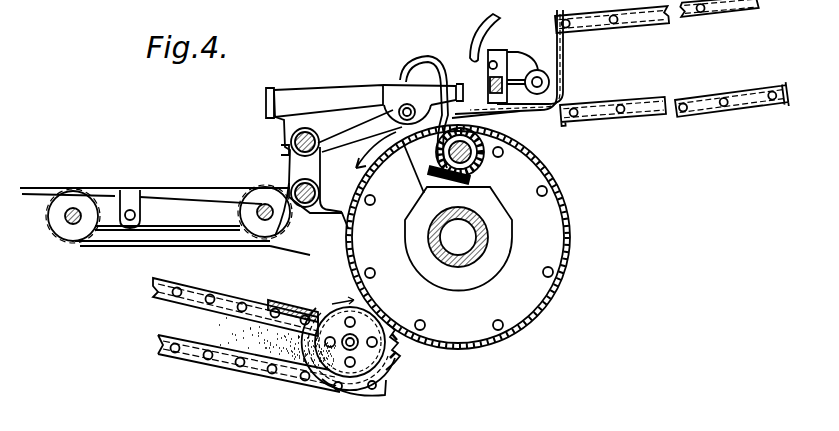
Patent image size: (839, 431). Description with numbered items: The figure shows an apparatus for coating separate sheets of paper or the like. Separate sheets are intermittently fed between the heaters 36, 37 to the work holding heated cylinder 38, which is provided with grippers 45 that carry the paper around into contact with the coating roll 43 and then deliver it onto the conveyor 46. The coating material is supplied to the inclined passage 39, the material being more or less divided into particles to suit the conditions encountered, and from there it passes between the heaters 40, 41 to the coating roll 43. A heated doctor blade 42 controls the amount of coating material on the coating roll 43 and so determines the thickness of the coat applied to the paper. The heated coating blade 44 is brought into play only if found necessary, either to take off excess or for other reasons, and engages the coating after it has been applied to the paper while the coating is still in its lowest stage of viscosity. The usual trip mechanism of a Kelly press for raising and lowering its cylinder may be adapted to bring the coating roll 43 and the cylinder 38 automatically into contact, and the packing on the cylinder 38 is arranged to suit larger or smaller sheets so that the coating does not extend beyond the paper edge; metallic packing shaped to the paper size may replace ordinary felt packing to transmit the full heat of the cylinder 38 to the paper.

The heater 36 is at (634, 18).
The heater 37 is at (716, 110).
The work holding heated cylinder 38 is at (557, 214).
The inclined passage 39 is at (273, 341).
The heater 40 is at (276, 368).
The heater 41 is at (198, 296).
The heated doctor blade 42 is at (328, 316).
The coating roll 43 is at (374, 392).
The heated coating blade 44 is at (397, 337).
The grippers 45 is at (440, 78).
The conveyor 46 is at (187, 188).